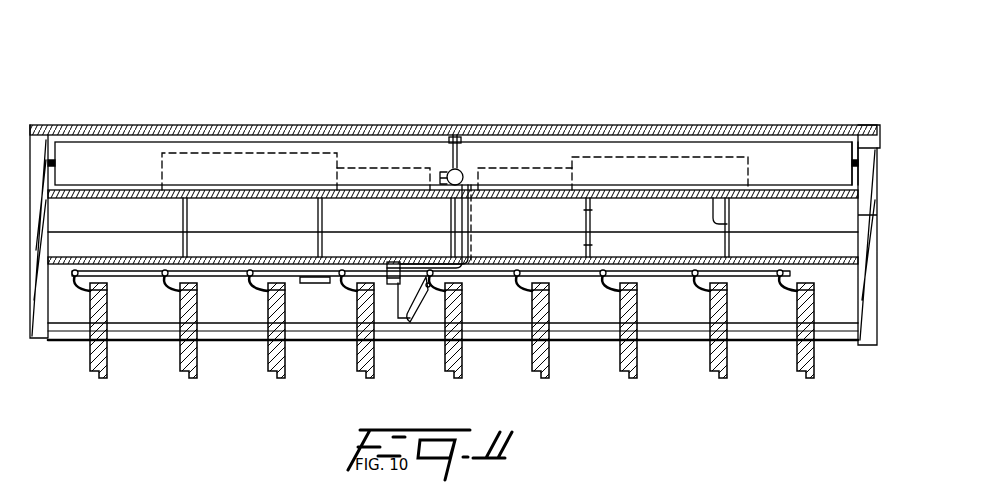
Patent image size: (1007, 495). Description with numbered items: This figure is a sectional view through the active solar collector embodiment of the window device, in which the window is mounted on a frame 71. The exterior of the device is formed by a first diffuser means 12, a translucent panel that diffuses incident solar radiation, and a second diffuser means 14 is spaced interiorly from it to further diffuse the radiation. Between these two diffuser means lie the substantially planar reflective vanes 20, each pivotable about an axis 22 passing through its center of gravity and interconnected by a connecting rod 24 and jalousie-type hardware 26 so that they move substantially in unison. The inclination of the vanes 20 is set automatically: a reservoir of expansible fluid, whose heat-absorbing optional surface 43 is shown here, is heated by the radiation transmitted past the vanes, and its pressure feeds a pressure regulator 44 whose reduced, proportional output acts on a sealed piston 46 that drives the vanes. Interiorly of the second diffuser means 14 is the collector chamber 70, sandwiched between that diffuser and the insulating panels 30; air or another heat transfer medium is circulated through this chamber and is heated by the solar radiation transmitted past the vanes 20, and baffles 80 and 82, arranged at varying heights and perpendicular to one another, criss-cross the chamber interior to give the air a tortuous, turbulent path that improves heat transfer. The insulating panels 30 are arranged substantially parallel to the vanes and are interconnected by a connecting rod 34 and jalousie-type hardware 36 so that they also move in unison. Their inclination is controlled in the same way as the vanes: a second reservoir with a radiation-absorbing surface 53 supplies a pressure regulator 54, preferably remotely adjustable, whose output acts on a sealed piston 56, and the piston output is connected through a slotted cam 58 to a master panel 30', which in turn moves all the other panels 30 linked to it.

The first diffuser means 12 is at (113, 128).
The second diffuser means 14 is at (140, 192).
The reflective vanes 20 is at (778, 158).
The axis 22 is at (858, 170).
The connecting rod 24 is at (460, 140).
The jalousie-type hardware 26 is at (450, 137).
The insulating panels 30 is at (512, 369).
The master panel 30' is at (484, 342).
The connecting rod 34 is at (145, 272).
The jalousie-type hardware 36 is at (165, 275).
The optional surface 43 is at (205, 155).
The pressure regulator 44 is at (377, 165).
The sealed piston 46 is at (470, 175).
The radiation-absorbing surface 53 is at (678, 158).
The pressure regulator 54 is at (540, 165).
The sealed piston 56 is at (320, 283).
The slotted cam 58 is at (403, 320).
The collector chamber 70 is at (112, 240).
The frame 71 is at (870, 300).
The baffles 80 is at (318, 238).
The baffles 82 is at (624, 218).